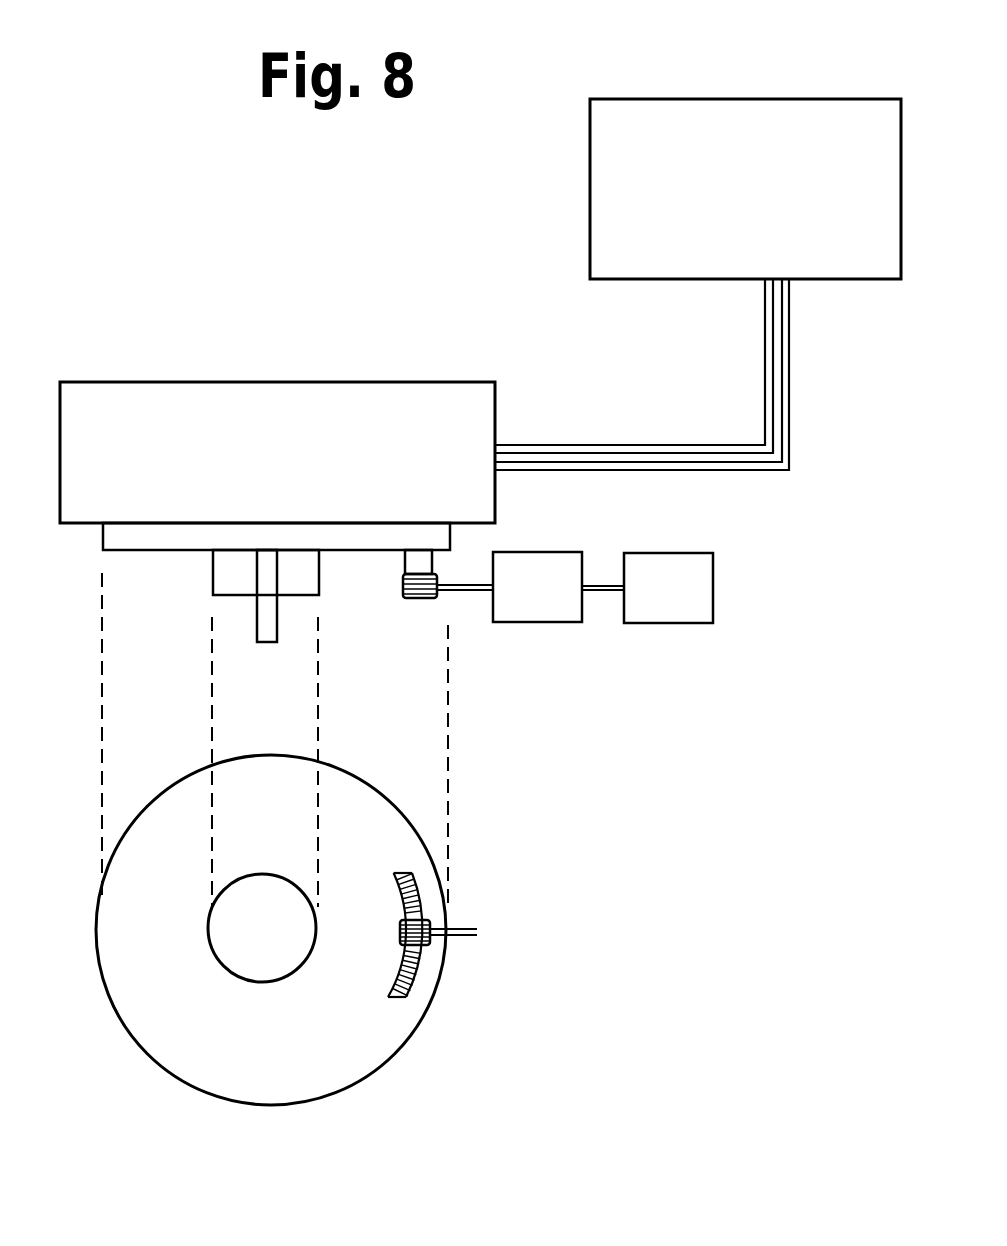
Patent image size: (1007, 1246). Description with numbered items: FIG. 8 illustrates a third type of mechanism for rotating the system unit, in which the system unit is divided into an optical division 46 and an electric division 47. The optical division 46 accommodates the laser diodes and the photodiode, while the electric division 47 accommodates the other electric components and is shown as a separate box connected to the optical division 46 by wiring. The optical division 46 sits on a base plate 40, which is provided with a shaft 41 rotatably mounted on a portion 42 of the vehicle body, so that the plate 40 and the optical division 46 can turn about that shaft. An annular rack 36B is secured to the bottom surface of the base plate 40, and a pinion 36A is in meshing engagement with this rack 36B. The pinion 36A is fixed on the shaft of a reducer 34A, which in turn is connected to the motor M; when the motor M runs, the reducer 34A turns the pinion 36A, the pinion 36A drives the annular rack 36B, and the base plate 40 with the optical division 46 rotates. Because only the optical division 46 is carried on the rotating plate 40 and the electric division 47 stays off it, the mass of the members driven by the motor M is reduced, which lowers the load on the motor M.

The electric division 47 is at (771, 99).
The optical division 46 is at (405, 383).
The base plate 40 is at (298, 543).
The portion of the vehicle body 42 is at (222, 572).
The shaft 41 is at (256, 619).
The reducer 34A is at (550, 552).
The motor M is at (685, 553).
The pinion 36A is at (426, 600).
The annular rack 36B is at (413, 985).